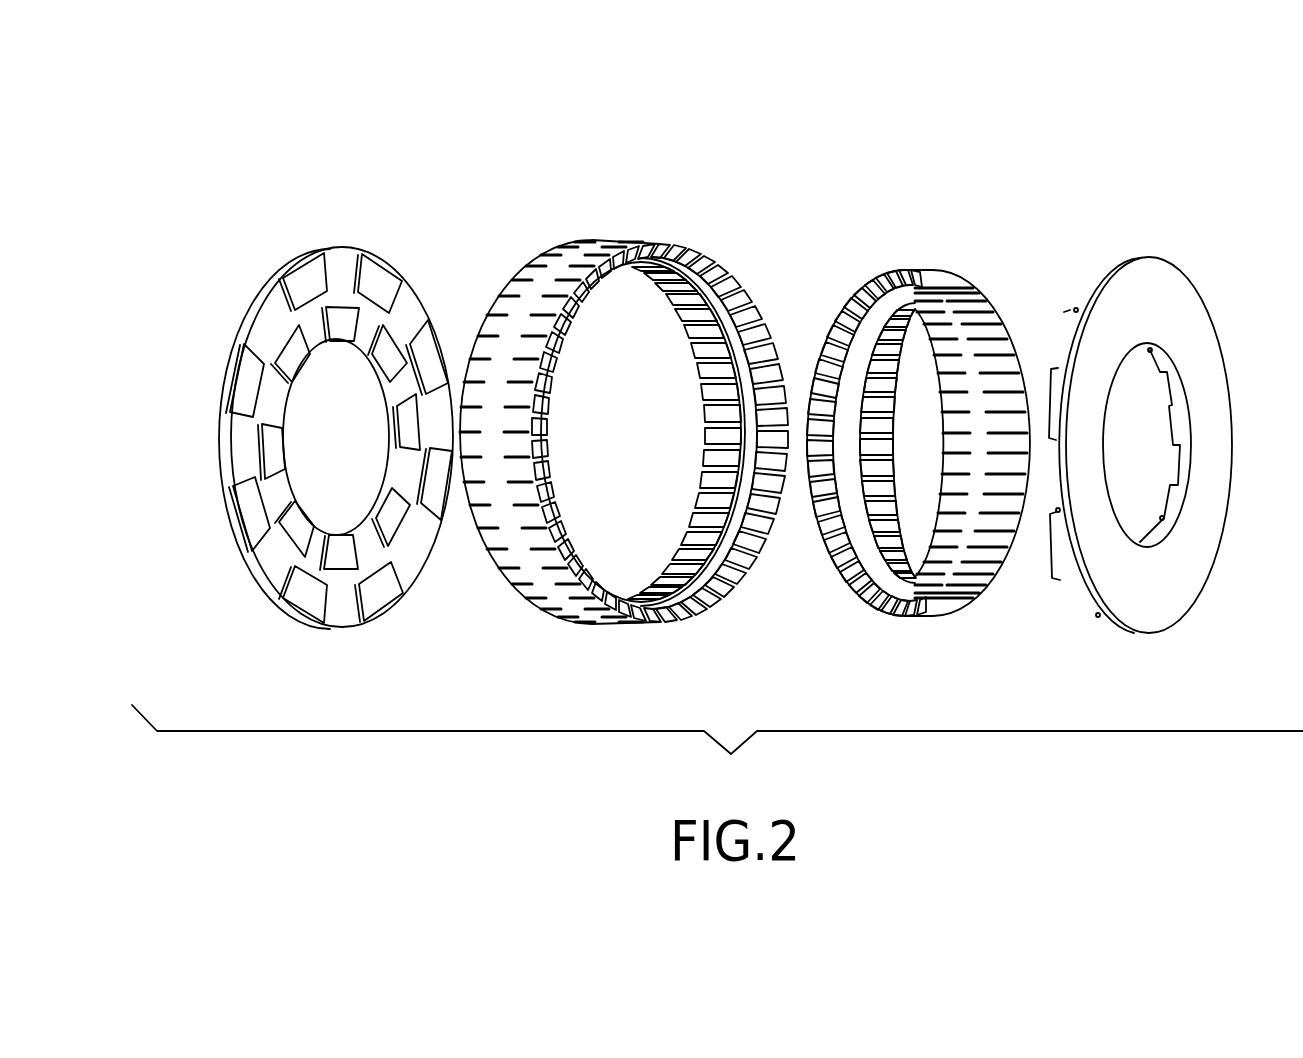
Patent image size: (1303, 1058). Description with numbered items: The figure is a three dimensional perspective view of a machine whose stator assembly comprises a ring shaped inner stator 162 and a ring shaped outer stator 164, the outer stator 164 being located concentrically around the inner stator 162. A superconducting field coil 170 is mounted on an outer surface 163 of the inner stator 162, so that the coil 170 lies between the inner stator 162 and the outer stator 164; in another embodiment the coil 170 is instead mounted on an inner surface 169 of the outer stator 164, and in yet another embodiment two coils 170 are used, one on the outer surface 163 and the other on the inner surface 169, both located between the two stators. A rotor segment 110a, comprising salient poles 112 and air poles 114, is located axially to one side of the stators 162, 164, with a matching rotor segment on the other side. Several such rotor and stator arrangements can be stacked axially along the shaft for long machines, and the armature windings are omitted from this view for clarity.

The rotor segment 110a is at (1162, 592).
The salient poles 112 is at (395, 347).
The air poles 114 is at (370, 545).
The inner stator 162 is at (918, 328).
The outer surface 163 is at (925, 278).
The outer stator 164 is at (631, 379).
The inner surface 169 is at (712, 593).
The superconducting field coil 170 is at (668, 600).